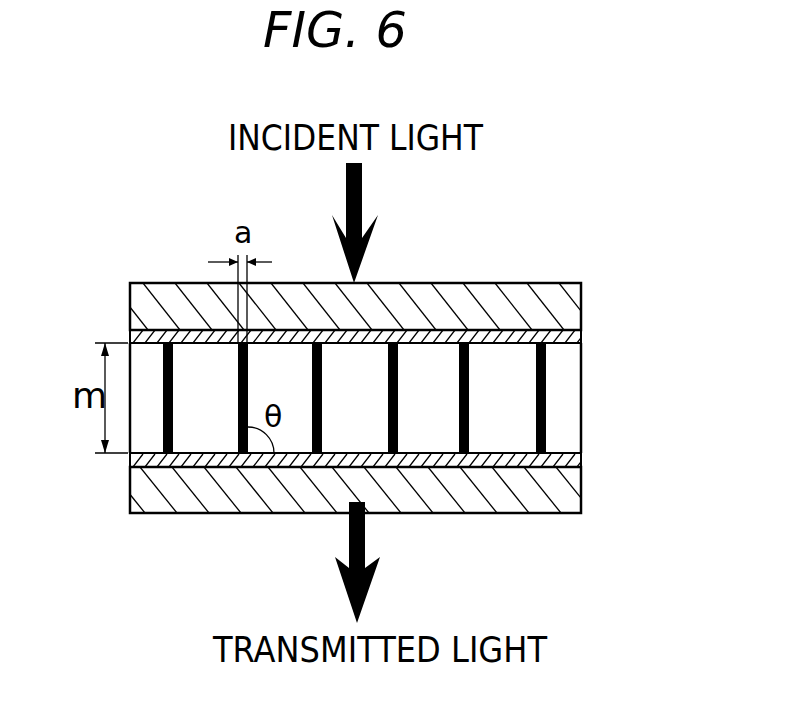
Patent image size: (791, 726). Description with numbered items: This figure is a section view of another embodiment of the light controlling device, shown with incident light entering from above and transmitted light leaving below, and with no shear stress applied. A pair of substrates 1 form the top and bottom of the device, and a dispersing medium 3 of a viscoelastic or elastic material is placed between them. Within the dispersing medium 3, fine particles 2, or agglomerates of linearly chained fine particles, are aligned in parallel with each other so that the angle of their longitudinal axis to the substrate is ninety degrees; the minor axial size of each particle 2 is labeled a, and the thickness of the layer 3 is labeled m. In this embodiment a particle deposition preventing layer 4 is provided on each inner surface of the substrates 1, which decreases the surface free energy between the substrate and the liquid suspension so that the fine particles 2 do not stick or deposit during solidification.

The substrate 1 is at (572, 306).
The fine particles 2 is at (556, 378).
The dispersing medium 3 is at (575, 424).
The particle deposition preventing layer 4 is at (575, 340).